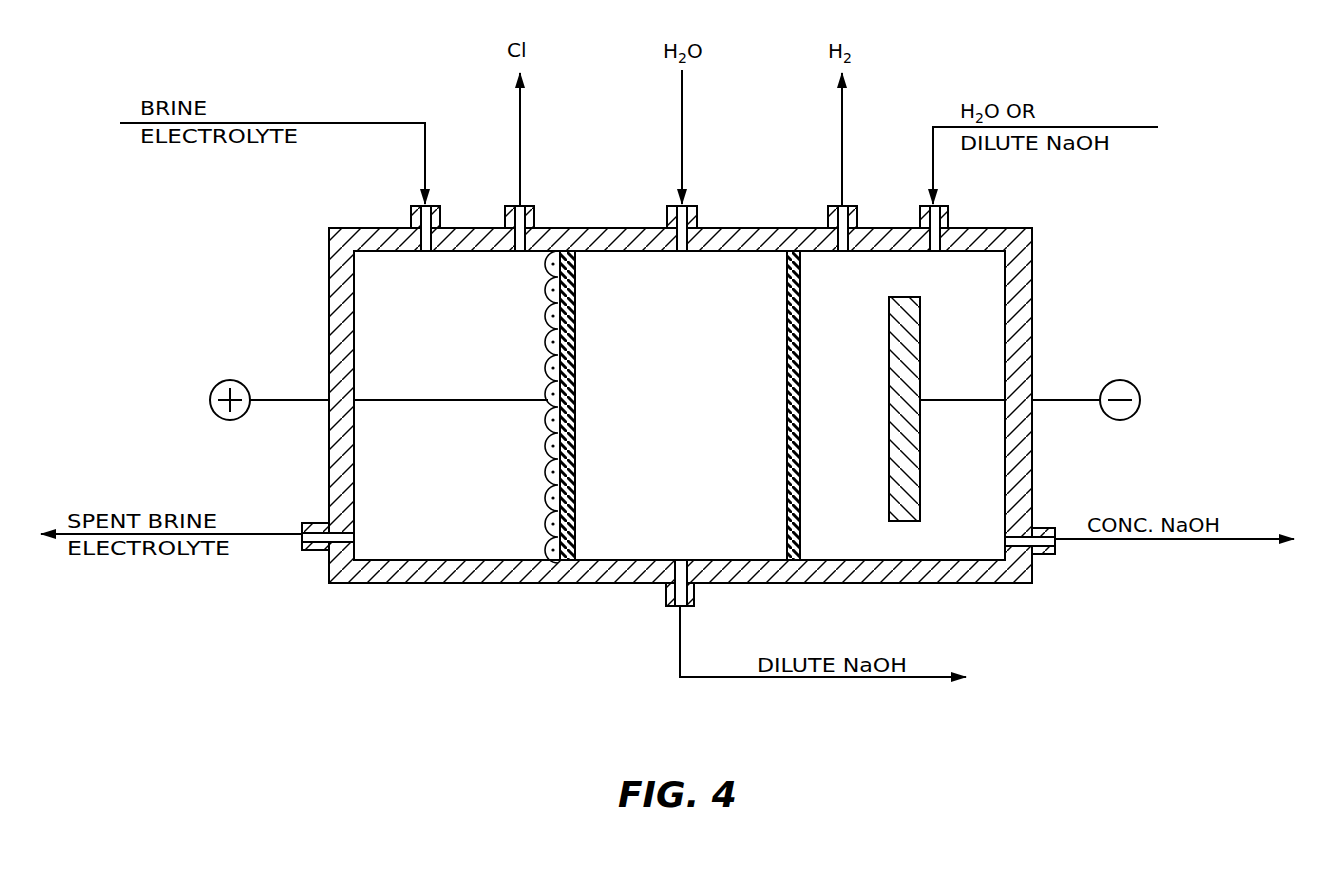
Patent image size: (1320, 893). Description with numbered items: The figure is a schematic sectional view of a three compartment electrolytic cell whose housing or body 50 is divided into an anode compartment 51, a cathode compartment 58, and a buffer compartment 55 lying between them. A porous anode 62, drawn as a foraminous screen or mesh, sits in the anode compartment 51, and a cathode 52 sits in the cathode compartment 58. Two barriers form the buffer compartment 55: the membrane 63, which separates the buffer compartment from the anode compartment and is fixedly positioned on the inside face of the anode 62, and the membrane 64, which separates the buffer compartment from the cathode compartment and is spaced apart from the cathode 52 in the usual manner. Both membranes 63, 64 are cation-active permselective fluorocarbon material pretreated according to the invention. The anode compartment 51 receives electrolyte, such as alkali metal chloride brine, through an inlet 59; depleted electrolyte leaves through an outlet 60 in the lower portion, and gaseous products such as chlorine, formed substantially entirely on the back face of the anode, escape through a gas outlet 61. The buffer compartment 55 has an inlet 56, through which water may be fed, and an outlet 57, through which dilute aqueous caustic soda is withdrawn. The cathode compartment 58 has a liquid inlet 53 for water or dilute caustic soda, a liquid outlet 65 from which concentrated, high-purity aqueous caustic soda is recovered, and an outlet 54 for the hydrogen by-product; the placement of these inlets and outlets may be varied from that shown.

The cell housing 50 is at (329, 310).
The anode compartment 51 is at (461, 553).
The cathode 52 is at (920, 478).
The liquid inlet 53 is at (948, 214).
The gas outlet 54 is at (828, 215).
The buffer compartment 55 is at (707, 553).
The inlet 56 is at (667, 215).
The outlet 57 is at (666, 603).
The cathode compartment 58 is at (868, 553).
The inlet 59 is at (411, 215).
The outlet 60 is at (302, 523).
The gas outlet 61 is at (534, 215).
The porous anode 62 is at (547, 330).
The membrane 63 is at (575, 366).
The membrane 64 is at (787, 365).
The liquid outlet 65 is at (1047, 555).